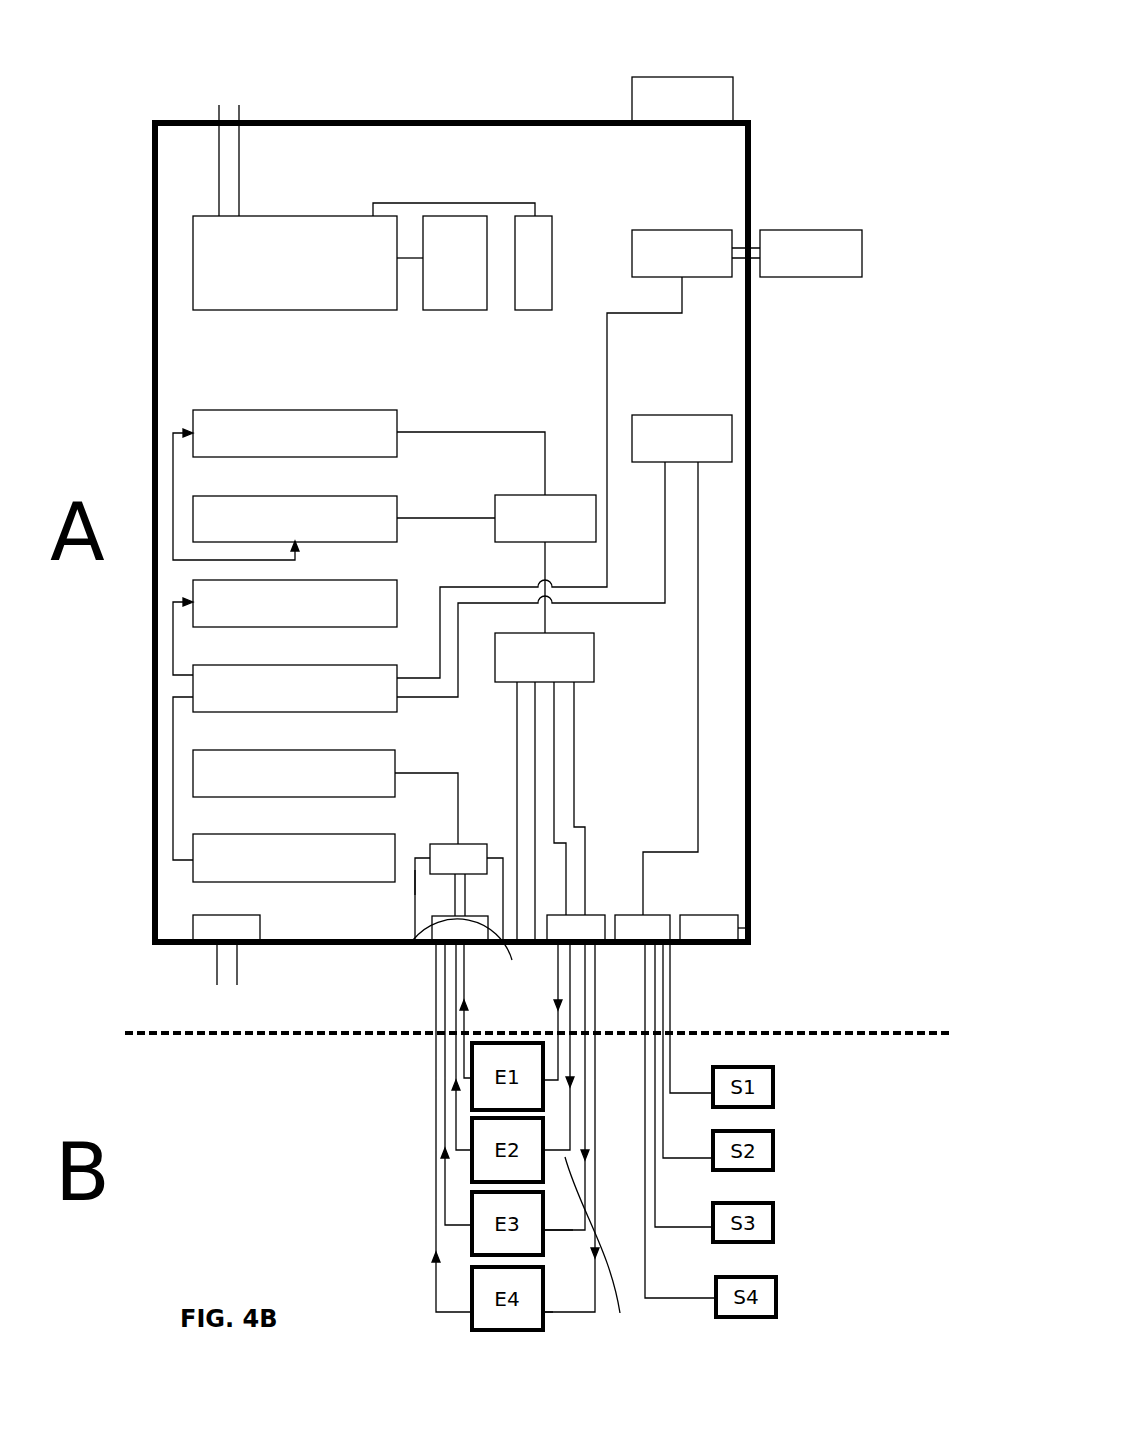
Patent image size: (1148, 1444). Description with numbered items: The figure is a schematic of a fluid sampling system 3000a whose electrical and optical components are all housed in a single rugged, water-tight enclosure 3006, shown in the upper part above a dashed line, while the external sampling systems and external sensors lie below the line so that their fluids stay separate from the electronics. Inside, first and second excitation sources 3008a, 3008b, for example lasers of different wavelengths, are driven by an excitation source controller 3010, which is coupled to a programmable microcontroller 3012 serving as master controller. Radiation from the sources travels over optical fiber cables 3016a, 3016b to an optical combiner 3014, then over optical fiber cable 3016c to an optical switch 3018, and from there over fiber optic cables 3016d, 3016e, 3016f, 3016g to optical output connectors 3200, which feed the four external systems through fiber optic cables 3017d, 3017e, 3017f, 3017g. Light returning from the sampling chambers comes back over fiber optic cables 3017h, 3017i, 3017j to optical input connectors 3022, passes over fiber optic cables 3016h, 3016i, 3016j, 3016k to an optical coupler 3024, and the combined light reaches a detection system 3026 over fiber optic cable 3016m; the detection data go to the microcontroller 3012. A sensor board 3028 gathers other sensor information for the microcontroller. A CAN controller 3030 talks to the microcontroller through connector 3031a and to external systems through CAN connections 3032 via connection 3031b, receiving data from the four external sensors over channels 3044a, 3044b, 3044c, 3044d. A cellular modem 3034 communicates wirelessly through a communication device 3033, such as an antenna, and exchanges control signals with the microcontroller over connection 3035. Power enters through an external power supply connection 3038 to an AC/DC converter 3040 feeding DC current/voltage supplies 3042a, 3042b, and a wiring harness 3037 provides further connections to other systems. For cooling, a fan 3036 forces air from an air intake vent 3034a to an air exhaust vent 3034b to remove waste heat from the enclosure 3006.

The fluid sampling system 3000a is at (758, 21).
The enclosure 3006 is at (748, 560).
The first excitation source 3008a is at (285, 410).
The second excitation source 3008b is at (285, 496).
The excitation source controller 3010 is at (315, 580).
The programmable microcontroller 3012 is at (283, 665).
The optical combiner 3014 is at (560, 495).
The optical fiber cable 3016a is at (470, 432).
The optical fiber cable 3016b is at (435, 518).
The optical fiber cable 3016c is at (560, 612).
The fiber optic cable 3016d is at (574, 695).
The fiber optic cable 3016e is at (554, 720).
The fiber optic cable 3016f is at (535, 738).
The fiber optic cable 3016g is at (517, 768).
The fiber optic cable 3016h is at (415, 882).
The fiber optic cable 3016i is at (430, 902).
The fiber optic cable 3016j is at (480, 954).
The fiber optic cable 3016k is at (497, 858).
The fiber optic cable 3016m is at (418, 773).
The fiber optic cable 3017d is at (553, 1314).
The fiber optic cable 3017e is at (573, 1232).
The fiber optic cable 3017f is at (615, 1246).
The fiber optic cable 3017g is at (565, 1012).
The fiber optic cable 3017h is at (463, 1077).
The fiber optic cable 3017i is at (444, 1215).
The fiber optic cable 3017j is at (455, 1128).
The optical switch 3018 is at (594, 660).
The optical input connectors 3022 is at (413, 940).
The optical coupler 3024 is at (436, 844).
The detection system 3026 is at (283, 750).
The sensor board 3028 is at (283, 834).
The CAN controller 3030 is at (684, 415).
The connector 3031a is at (665, 512).
The connection 3031b is at (698, 545).
The CAN connections 3032 is at (700, 940).
The communication device 3033 is at (812, 230).
The cellular modem 3034 is at (682, 230).
The air intake vent 3034a is at (217, 975).
The air exhaust vent 3034b is at (684, 77).
The electrical or optical connection 3035 is at (607, 372).
The fan 3036 is at (193, 925).
The wiring harness 3037 is at (745, 935).
The external power supply connection 3038 is at (241, 105).
The AC/DC converter 3040 is at (340, 216).
The DC current/voltage supply 3042a is at (455, 216).
The DC current/voltage supply 3042b is at (545, 216).
The electrical or optical channel 3044a is at (680, 1094).
The electrical or optical channel 3044b is at (675, 1160).
The electrical or optical channel 3044c is at (672, 1228).
The electrical or optical channel 3044d is at (687, 1300).
The optical output connectors 3200 is at (632, 940).